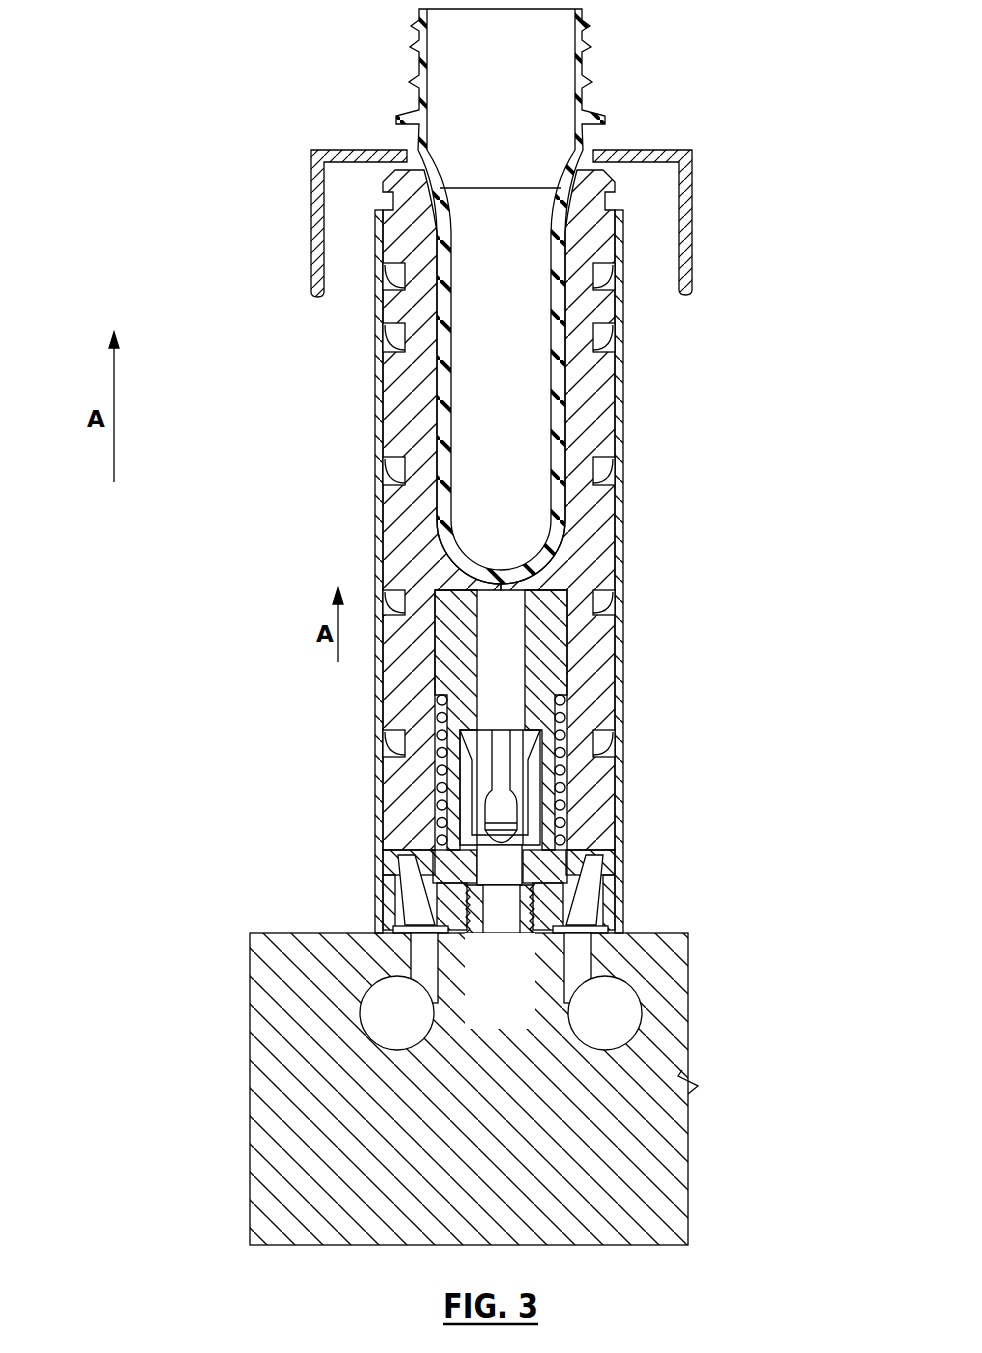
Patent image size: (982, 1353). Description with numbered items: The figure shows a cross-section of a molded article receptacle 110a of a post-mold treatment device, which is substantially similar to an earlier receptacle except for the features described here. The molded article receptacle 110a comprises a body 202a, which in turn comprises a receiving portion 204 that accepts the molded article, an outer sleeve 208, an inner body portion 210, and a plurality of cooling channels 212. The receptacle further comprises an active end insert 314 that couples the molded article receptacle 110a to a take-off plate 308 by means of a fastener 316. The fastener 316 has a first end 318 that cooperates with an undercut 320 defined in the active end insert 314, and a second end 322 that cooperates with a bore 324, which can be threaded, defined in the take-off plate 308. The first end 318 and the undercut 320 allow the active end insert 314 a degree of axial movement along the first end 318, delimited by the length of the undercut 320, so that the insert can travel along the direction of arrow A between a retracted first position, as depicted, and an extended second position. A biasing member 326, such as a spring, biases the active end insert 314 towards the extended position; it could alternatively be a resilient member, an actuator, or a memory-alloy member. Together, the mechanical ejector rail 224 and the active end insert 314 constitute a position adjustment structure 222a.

The molded article receptacle 110a is at (706, 354).
The body 202a is at (405, 516).
The receiving portion 204 is at (560, 150).
The outer sleeve 208 is at (380, 478).
The inner body portion 210 is at (413, 402).
The cooling channels 212 is at (603, 478).
The position adjustment structure 222a is at (147, 603).
The mechanical ejector rail 224 is at (308, 284).
The active end insert 314 is at (465, 722).
The fastener 316 is at (596, 747).
The first end 318 is at (513, 780).
The undercut 320 is at (465, 808).
The second end 322 is at (523, 947).
The bore 324 is at (463, 995).
The biasing member 326 is at (440, 708).
The take-off plate 308 is at (661, 1150).